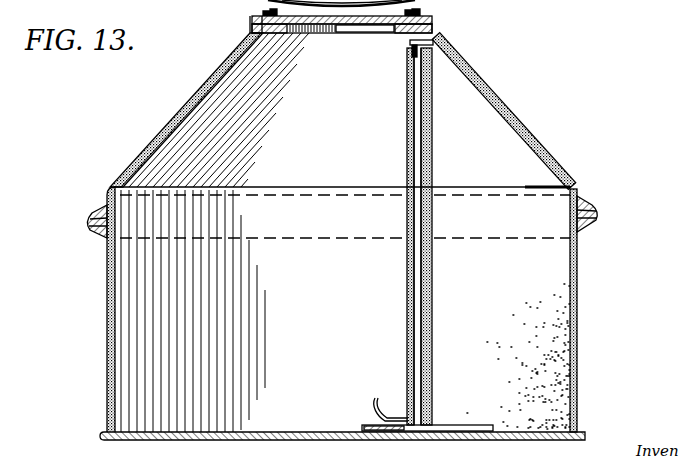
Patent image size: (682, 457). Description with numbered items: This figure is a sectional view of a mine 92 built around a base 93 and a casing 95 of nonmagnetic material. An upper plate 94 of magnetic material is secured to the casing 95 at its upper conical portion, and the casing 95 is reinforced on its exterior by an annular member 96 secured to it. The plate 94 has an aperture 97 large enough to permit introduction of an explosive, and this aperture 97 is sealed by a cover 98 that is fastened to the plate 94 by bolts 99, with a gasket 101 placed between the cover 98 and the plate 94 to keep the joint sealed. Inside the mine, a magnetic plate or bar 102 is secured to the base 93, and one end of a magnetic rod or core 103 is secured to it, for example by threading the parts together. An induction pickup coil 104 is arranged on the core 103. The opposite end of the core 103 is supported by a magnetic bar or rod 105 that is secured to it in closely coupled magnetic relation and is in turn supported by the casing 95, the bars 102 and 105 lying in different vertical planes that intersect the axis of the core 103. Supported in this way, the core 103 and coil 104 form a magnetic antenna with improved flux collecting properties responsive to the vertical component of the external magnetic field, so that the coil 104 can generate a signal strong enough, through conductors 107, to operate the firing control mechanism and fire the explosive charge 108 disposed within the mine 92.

The mine 92 is at (106, 314).
The base 93 is at (100, 434).
The upper plate 94 is at (433, 29).
The casing 95 is at (578, 306).
The annular member 96 is at (100, 211).
The aperture 97 is at (366, 31).
The cover 98 is at (433, 17).
The bolts 99 is at (263, 13).
The gasket 101 is at (250, 22).
The magnetic plate or bar 102 is at (450, 425).
The magnetic rod or core 103 is at (407, 273).
The induction pickup coil 104 is at (433, 325).
The magnetic bar or rod 105 is at (483, 92).
The conductors 107 is at (383, 401).
The explosive charge 108 is at (553, 380).